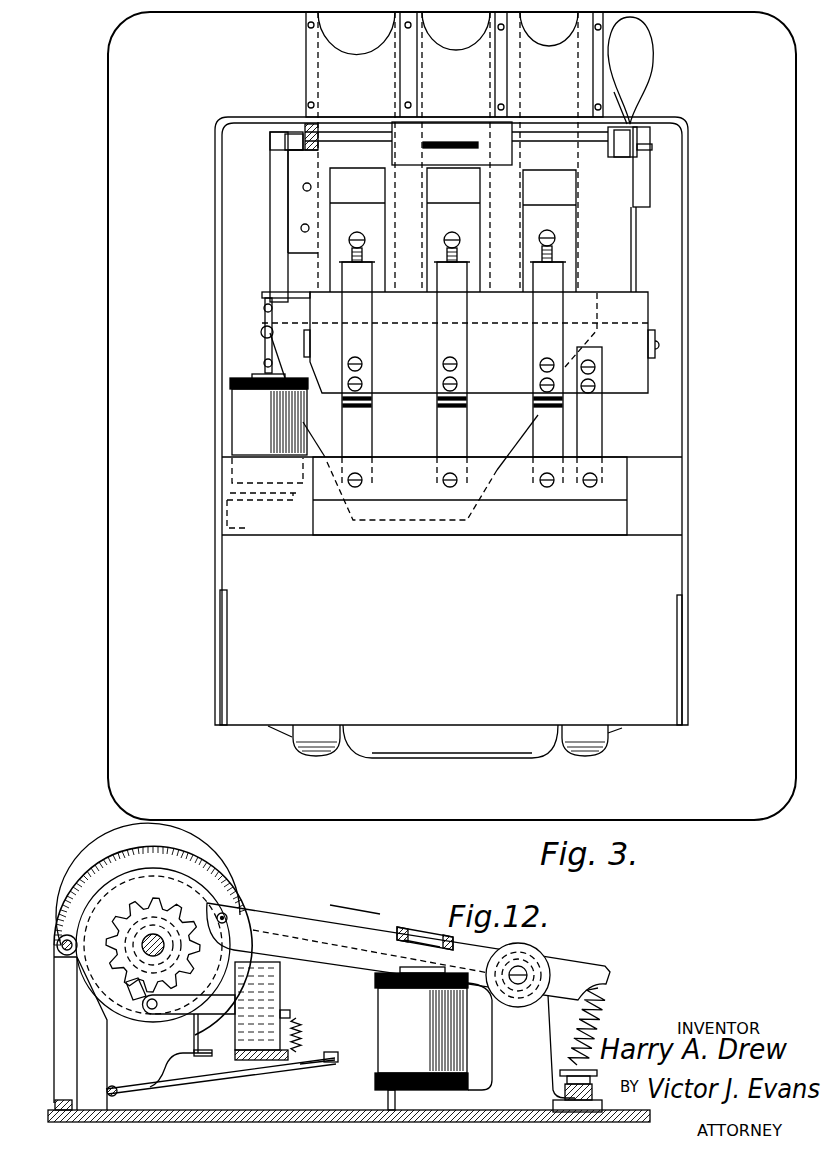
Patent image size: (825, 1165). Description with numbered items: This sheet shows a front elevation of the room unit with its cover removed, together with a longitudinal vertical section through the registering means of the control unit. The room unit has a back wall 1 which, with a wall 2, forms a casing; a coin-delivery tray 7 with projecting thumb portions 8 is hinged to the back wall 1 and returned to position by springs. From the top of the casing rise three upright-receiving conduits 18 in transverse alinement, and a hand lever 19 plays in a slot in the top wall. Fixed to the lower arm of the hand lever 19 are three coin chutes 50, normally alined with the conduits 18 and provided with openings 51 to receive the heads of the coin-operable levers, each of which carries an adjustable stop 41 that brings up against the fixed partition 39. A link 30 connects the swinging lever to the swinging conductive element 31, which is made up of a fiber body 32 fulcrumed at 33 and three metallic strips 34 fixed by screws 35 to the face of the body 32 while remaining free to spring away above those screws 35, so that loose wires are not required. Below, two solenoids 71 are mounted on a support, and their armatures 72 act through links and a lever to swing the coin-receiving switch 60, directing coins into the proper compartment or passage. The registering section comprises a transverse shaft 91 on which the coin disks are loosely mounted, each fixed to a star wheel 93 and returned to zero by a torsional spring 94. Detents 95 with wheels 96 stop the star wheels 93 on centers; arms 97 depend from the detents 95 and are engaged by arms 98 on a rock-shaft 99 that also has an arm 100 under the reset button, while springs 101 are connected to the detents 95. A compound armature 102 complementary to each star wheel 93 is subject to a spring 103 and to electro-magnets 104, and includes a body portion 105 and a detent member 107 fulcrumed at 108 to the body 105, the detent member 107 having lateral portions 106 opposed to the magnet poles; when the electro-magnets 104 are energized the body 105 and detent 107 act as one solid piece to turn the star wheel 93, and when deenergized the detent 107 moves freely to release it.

In FIG. 3, the back wall 1 is at (768, 790).
In FIG. 3, the wall 2 is at (677, 123).
In FIG. 3, the coin-delivery tray 7 is at (468, 753).
In FIG. 3, the projecting thumb portions 8 is at (586, 756).
In FIG. 3, the upright-receiving conduits 18 is at (573, 54).
In FIG. 3, the hand lever 19 is at (645, 78).
In FIG. 3, the link 30 is at (268, 347).
In FIG. 3, the swinging conductive element 31 is at (536, 408).
In FIG. 3, the body 32 is at (598, 374).
In FIG. 3, the fulcrum 33 is at (660, 346).
In FIG. 3, the metallic strips 34 is at (538, 311).
In FIG. 3, the screws 35 is at (542, 384).
In FIG. 3, the fixed partition 39 is at (286, 280).
In FIG. 3, the adjustable stop 41 is at (536, 246).
In FIG. 3, the coin chutes 50 is at (427, 186).
In FIG. 3, the openings 51 is at (565, 228).
In FIG. 3, the coin-receiving switch 60 is at (430, 518).
In FIG. 3, the solenoids 71 is at (247, 423).
In FIG. 3, the armatures 72 is at (262, 376).
In FIG. 12, the transverse shaft 91 is at (156, 940).
In FIG. 12, the star wheel 93 is at (181, 920).
In FIG. 12, the torsional spring 94 is at (124, 880).
In FIG. 12, the detents 95 is at (210, 1010).
In FIG. 12, the wheels 96 is at (150, 1012).
In FIG. 12, the arms 97 is at (250, 1070).
In FIG. 12, the arms 98 is at (170, 1052).
In FIG. 12, the rock-shaft 99 is at (167, 1088).
In FIG. 12, the arm 100 is at (328, 1055).
In FIG. 12, the springs 101 is at (304, 1022).
In FIG. 12, the compound armatures 102 is at (395, 946).
In FIG. 12, the spring 103 is at (612, 1009).
In FIG. 12, the electro-magnets 104 is at (433, 1038).
In FIG. 12, the body portion 105 is at (578, 975).
In FIG. 12, the lateral portions 106 is at (408, 927).
In FIG. 12, the detent member 107 is at (355, 898).
In FIG. 12, the fulcrum 108 is at (228, 914).